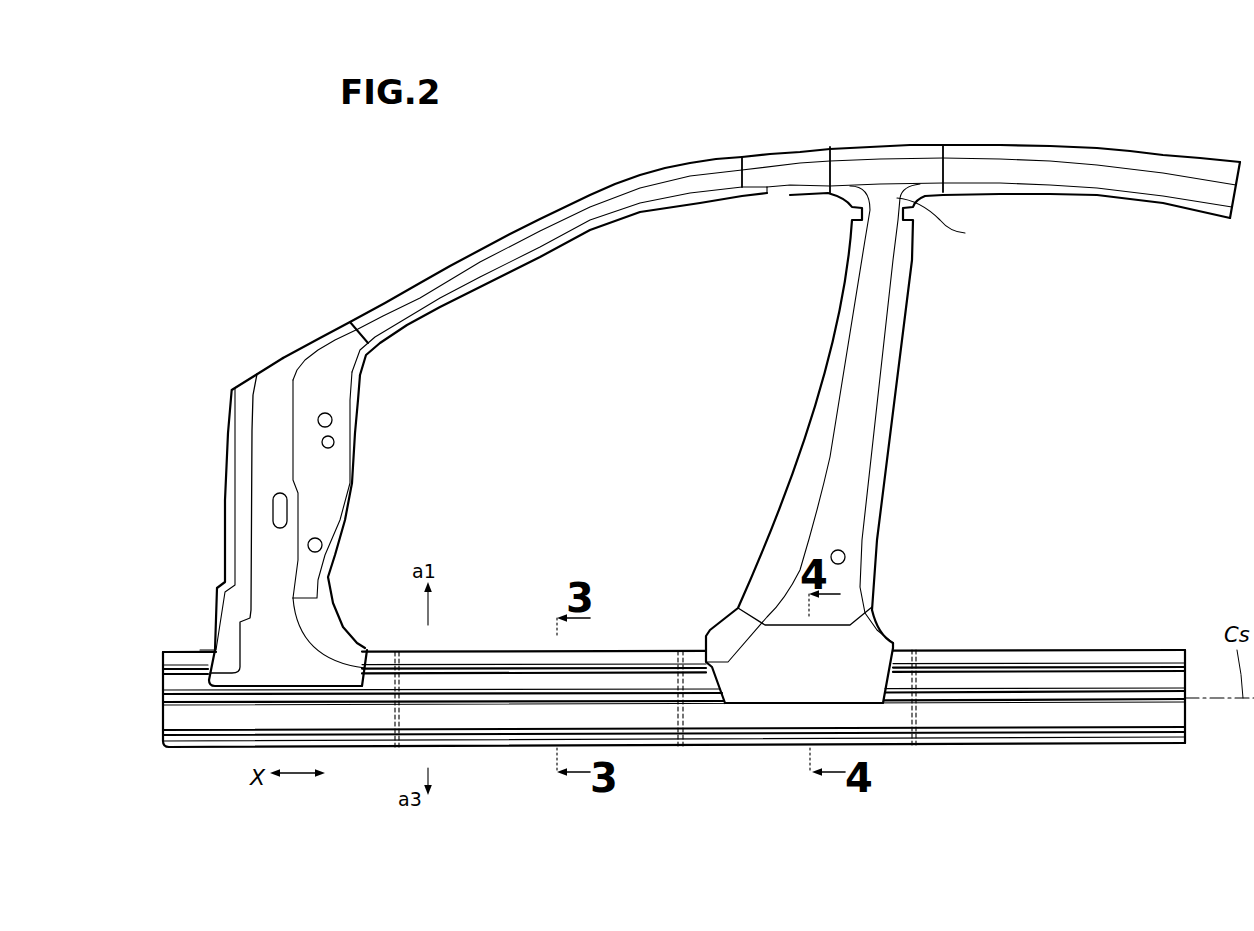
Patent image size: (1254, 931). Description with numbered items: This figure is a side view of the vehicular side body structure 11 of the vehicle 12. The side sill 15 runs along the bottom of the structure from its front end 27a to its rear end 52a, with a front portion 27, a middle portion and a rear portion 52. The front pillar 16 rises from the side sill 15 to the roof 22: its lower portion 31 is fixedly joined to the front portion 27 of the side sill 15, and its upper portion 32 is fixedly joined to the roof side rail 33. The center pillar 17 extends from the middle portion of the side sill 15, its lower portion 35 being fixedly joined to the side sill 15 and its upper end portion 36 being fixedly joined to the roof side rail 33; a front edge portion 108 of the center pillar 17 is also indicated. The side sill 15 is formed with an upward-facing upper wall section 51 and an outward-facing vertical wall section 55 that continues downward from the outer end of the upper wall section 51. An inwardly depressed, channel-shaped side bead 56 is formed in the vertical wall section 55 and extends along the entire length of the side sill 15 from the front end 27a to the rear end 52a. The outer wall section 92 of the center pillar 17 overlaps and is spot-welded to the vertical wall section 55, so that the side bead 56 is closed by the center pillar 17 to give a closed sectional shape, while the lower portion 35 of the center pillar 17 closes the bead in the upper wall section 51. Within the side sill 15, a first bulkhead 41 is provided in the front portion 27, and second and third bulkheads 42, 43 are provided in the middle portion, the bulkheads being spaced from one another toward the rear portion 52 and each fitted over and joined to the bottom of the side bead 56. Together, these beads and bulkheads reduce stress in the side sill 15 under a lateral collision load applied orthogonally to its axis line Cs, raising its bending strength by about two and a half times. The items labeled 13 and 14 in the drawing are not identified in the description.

The vehicular side body structure 11 is at (485, 595).
The vehicle 12 is at (360, 247).
The vehicle body side structure 13 is at (543, 358).
The front pillar lower (hinge pillar) 14 is at (283, 349).
The side sill 15 is at (638, 645).
The front pillar 16 is at (487, 238).
The center pillar 17 is at (903, 367).
The roof 22 is at (760, 150).
The front portion of the side sill 27 is at (222, 722).
The front end of the side sill 27a is at (160, 738).
The lower portion of the front pillar 31 is at (255, 533).
The upper portion of the front pillar 32 is at (595, 188).
The roof side rail 33 is at (993, 152).
The lower portion of the center pillar 35 is at (850, 645).
The upper end portion of the center pillar 36 is at (945, 222).
The first bulkhead 41 is at (398, 745).
The second bulkhead 42 is at (680, 748).
The third bulkhead 43 is at (913, 748).
The upper wall section 51 is at (513, 658).
The rear portion of the side sill 52 is at (1122, 717).
The rear end of the side sill 52a is at (1186, 716).
The vertical wall section 55 is at (487, 683).
The side bead 56 is at (523, 697).
The outer wall section of the center pillar 92 is at (864, 419).
The front edge portion of the center pillar 108 is at (725, 632).